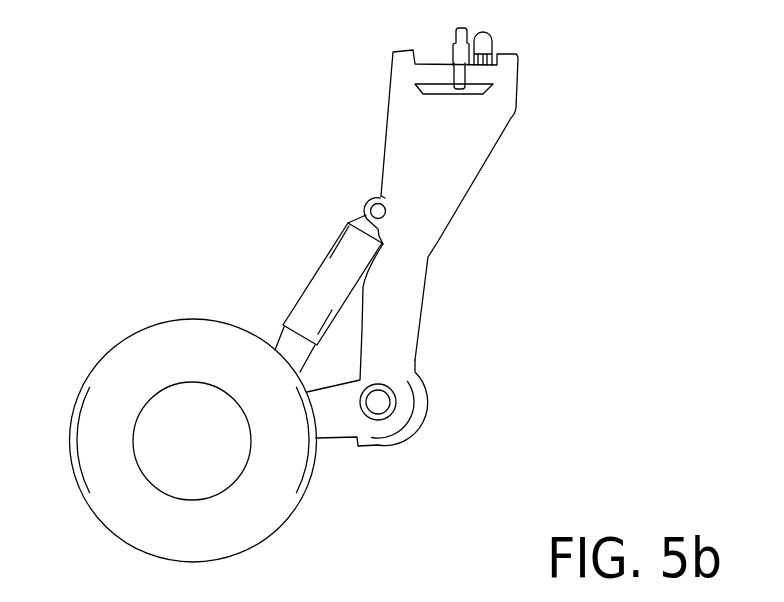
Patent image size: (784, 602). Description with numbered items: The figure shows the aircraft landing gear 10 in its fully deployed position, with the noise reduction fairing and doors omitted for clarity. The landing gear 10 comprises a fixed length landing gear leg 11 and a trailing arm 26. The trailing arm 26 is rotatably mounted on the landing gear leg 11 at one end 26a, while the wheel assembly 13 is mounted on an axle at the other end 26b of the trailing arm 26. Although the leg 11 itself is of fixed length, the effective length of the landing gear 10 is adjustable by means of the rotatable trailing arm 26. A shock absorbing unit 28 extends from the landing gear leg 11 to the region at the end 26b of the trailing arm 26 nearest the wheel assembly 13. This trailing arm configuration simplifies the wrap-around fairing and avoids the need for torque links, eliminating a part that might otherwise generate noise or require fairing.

The landing gear 10 is at (486, 229).
The landing gear leg 11 is at (467, 125).
The wheel assembly 13 is at (80, 438).
The trailing arm 26 is at (333, 425).
The end of trailing arm 26a is at (387, 407).
The end of trailing arm 26b is at (188, 403).
The shock absorbing unit 28 is at (322, 280).